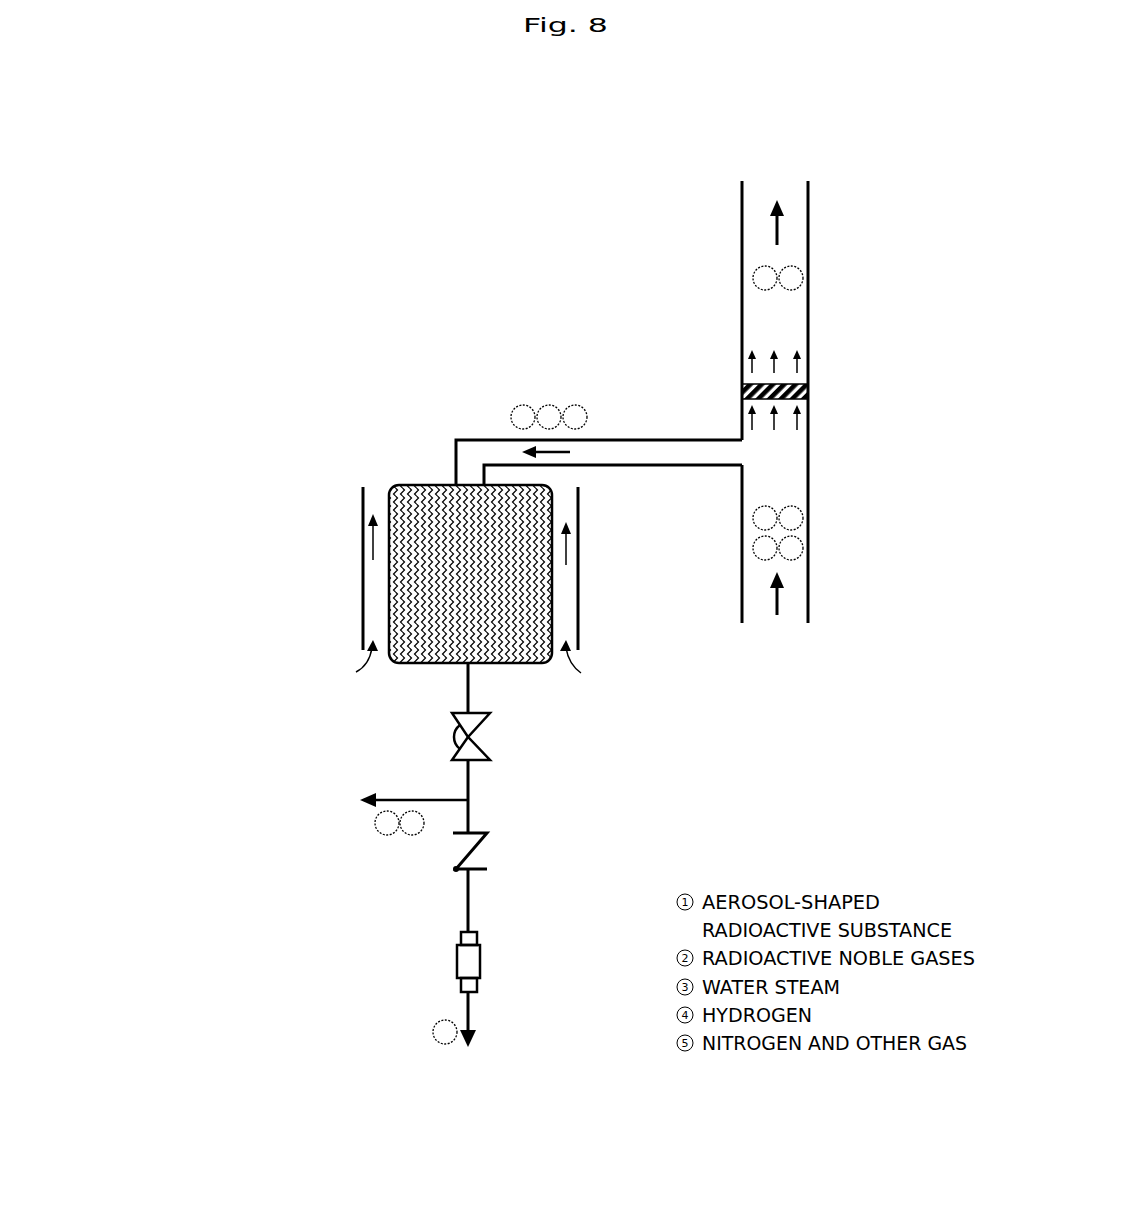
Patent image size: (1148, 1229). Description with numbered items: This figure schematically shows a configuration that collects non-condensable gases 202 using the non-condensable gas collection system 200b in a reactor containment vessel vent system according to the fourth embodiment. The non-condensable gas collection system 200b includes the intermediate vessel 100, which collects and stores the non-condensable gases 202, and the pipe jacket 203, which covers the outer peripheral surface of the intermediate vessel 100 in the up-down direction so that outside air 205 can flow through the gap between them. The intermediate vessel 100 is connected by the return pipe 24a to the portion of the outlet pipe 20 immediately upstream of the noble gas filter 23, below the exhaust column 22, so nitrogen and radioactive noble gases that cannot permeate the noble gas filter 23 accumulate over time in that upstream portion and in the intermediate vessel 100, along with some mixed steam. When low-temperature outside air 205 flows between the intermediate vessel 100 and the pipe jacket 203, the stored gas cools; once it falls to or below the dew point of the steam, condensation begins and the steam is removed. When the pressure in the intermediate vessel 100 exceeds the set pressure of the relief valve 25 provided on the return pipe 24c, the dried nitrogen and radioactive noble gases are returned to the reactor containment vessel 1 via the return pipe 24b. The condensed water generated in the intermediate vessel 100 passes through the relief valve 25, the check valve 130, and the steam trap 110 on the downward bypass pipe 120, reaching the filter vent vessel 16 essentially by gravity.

The reactor containment vessel 1 is at (252, 799).
The filter vent vessel 16 is at (623, 872).
The outlet pipe 20 is at (808, 586).
The exhaust column 22 is at (773, 257).
The noble gas filter 23 is at (808, 393).
The return pipe 24a is at (636, 438).
The return pipe 24b is at (412, 798).
The return pipe 24c is at (466, 696).
The relief valve 25 is at (486, 750).
The intermediate vessel 100 is at (420, 484).
The steam trap 110 is at (481, 965).
The bypass pipe 120 is at (470, 1025).
The check valve 130 is at (490, 869).
The non-condensable gas collection system 200b is at (364, 440).
The non-condensable gases 202 is at (388, 614).
The pipe jacket 203 is at (363, 552).
The outside air 205 is at (575, 678).